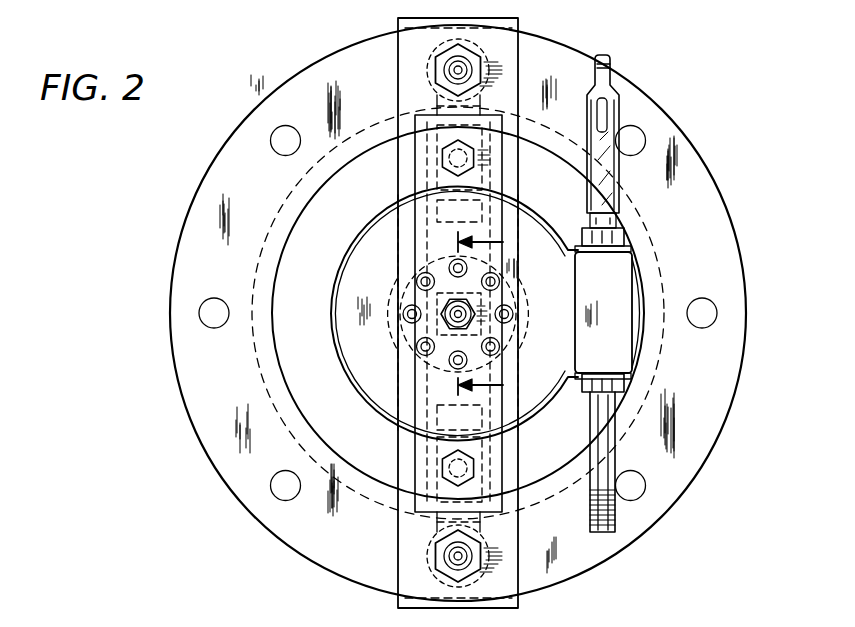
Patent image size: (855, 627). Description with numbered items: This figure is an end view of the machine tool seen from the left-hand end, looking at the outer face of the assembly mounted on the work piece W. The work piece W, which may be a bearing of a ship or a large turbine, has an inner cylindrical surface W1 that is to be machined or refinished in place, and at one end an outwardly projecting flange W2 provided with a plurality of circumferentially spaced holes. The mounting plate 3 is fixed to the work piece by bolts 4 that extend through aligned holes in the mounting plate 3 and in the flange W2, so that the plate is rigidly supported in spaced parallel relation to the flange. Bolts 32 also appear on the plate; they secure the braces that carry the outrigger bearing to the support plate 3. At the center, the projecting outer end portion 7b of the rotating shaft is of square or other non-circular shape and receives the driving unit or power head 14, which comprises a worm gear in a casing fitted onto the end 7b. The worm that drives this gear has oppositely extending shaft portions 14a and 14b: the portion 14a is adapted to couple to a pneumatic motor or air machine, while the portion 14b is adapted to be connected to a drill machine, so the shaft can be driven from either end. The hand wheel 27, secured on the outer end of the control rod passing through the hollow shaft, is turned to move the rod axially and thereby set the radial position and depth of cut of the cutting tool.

The outwardly projecting flange W2 is at (171, 274).
The work piece W is at (262, 317).
The inner cylindrical surface W1 is at (312, 193).
The bolts 4 is at (458, 70).
The bolts 32 is at (450, 160).
The projecting outer end portion of the shaft 7b is at (514, 298).
The hand wheel 27 is at (416, 281).
The mounting plate 3 is at (484, 318).
The driving unit or power head 14 is at (642, 299).
The projecting shaft portion of the worm 14a is at (603, 146).
The projecting shaft portion of the worm 14b is at (615, 508).